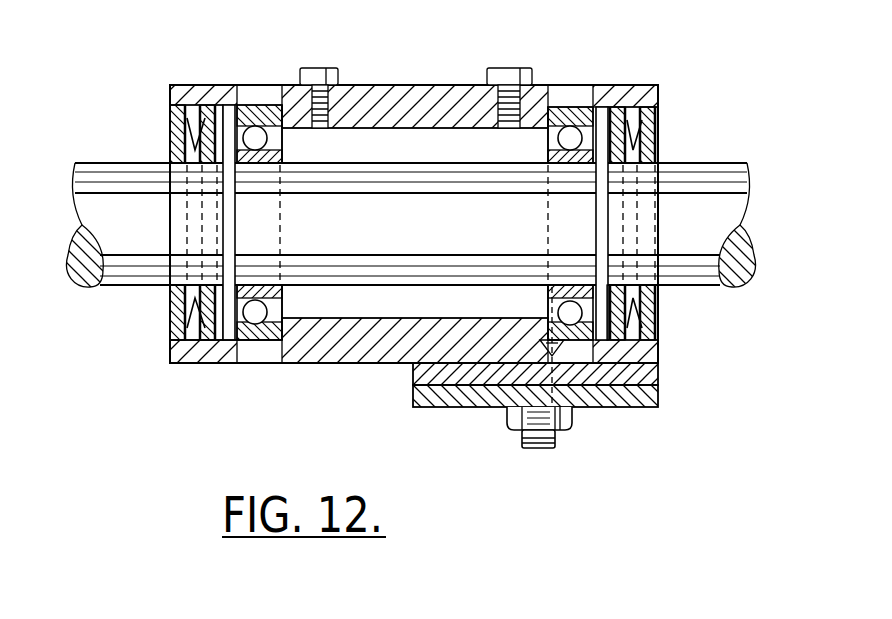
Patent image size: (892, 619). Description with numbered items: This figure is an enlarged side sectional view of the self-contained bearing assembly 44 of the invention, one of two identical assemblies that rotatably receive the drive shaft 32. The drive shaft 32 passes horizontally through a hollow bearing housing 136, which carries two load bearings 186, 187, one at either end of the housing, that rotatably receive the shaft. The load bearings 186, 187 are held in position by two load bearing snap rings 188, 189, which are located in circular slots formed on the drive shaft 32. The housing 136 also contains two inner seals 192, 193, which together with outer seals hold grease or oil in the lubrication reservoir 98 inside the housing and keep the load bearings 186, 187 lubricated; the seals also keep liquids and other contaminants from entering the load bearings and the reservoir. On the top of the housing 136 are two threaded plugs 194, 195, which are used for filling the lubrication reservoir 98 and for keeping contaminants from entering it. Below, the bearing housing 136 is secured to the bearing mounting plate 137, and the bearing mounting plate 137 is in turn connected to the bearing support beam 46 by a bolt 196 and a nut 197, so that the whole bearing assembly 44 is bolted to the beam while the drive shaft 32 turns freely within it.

The drive shaft 32 is at (690, 163).
The self-contained bearing assembly 44 is at (555, 74).
The bearing support beam 46 is at (413, 400).
The lubrication reservoir 98 is at (428, 161).
The bearing housing 136 is at (398, 85).
The bearing mounting plate 137 is at (660, 378).
The load bearing 186 is at (546, 340).
The load bearing 187 is at (244, 363).
The load bearing snap ring 188 is at (659, 340).
The load bearing snap ring 189 is at (233, 110).
The inner seal 192 is at (616, 107).
The inner seal 193 is at (214, 105).
The threaded plug 194 is at (505, 68).
The threaded plug 195 is at (325, 68).
The bolt 196 is at (555, 448).
The nut 197 is at (507, 422).